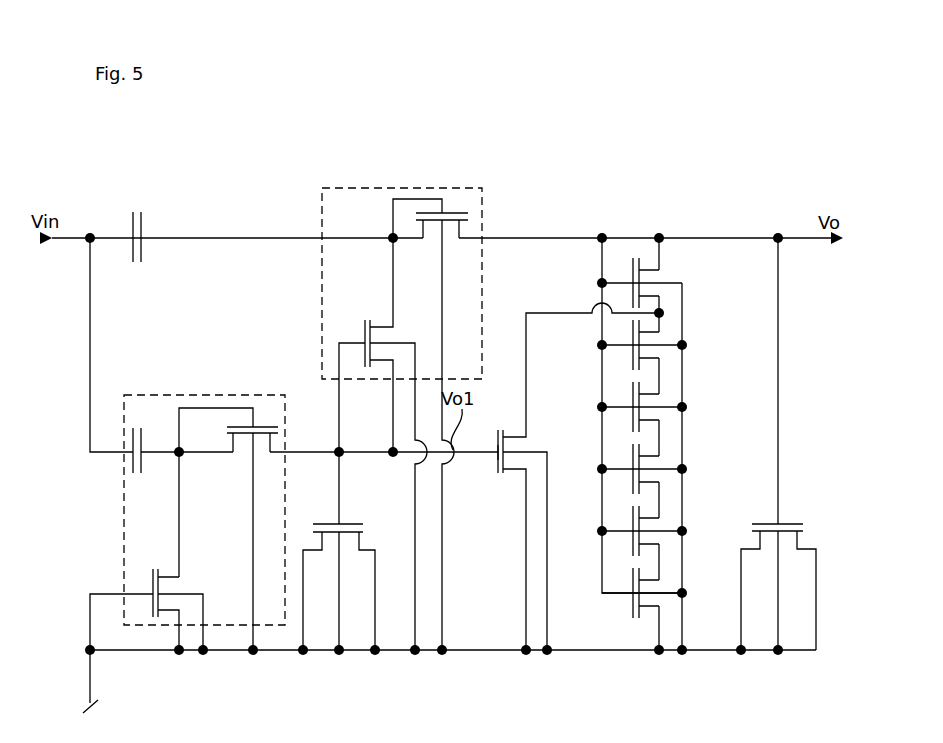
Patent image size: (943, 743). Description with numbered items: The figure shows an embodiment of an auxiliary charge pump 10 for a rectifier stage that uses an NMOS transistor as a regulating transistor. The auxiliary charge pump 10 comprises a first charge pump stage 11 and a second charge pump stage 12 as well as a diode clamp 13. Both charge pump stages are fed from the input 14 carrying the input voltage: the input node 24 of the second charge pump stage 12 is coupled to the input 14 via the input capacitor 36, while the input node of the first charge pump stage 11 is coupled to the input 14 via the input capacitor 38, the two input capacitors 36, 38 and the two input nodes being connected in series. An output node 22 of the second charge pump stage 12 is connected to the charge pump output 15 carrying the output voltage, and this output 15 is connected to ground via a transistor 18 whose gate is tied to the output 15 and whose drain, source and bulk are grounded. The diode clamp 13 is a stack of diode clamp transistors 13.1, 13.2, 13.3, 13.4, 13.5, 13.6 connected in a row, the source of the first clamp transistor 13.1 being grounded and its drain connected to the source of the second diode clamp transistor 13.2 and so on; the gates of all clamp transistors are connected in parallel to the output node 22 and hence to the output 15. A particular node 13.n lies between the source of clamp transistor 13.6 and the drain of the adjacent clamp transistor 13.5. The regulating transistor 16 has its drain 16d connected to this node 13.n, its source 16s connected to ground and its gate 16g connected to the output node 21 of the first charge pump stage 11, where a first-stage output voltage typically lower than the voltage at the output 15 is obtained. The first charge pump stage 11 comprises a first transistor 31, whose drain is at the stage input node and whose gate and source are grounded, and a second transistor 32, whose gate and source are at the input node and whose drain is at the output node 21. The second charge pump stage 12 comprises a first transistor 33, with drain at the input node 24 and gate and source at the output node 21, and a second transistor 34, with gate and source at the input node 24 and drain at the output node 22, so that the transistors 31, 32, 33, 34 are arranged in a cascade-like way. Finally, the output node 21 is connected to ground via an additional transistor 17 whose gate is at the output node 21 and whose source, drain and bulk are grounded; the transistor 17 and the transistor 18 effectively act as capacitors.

The auxiliary charge pump 10 is at (283, 178).
The first charge pump stage 11 is at (197, 394).
The second charge pump stage 12 is at (348, 188).
The diode clamp 13 is at (682, 407).
The first clamp transistor 13.1 is at (658, 588).
The second diode clamp transistor 13.2 is at (670, 521).
The diode clamp transistor 13.3 is at (670, 459).
The diode clamp transistor 13.4 is at (670, 397).
The diode clamp transistor 13.5 is at (670, 335).
The diode clamp transistor 13.6 is at (670, 273).
The node 13.n is at (662, 308).
The input 14 is at (42, 245).
The charge pump output 15 is at (822, 250).
The regulating transistor 16 is at (552, 476).
The drain 16d is at (518, 437).
The gate 16g is at (469, 455).
The source 16s is at (512, 472).
The additional transistor 17 is at (347, 537).
The transistor 18 is at (785, 550).
The output node 21 is at (345, 456).
The output node 22 is at (600, 236).
The input node 24 is at (393, 234).
The first transistor 31 is at (155, 567).
The second transistor 32 is at (263, 424).
The first transistor 33 is at (348, 328).
The second transistor 34 is at (449, 208).
The input capacitor 36 is at (134, 212).
The input capacitor 38 is at (136, 476).